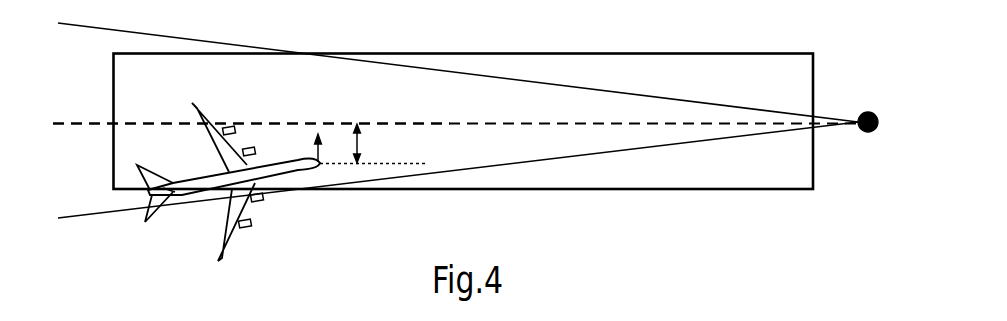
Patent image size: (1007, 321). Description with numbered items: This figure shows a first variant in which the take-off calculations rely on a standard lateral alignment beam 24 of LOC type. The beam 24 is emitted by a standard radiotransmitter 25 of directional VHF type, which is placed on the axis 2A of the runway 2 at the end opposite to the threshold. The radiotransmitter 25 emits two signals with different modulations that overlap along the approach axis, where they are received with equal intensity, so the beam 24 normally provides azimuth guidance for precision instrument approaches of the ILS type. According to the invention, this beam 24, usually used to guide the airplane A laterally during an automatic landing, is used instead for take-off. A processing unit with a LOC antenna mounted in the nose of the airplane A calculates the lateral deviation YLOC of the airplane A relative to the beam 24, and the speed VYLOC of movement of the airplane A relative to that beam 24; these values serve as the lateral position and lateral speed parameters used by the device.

The runway 2 is at (688, 189).
The axis of the runway 2A is at (155, 127).
The lateral alignment beam 24 is at (88, 114).
The radiotransmitter 25 is at (877, 131).
The airplane A is at (247, 208).
The speed of movement of the airplane relative to the beam VYLOC is at (312, 157).
The lateral deviation of the airplane relative to the beam YLOC is at (372, 144).